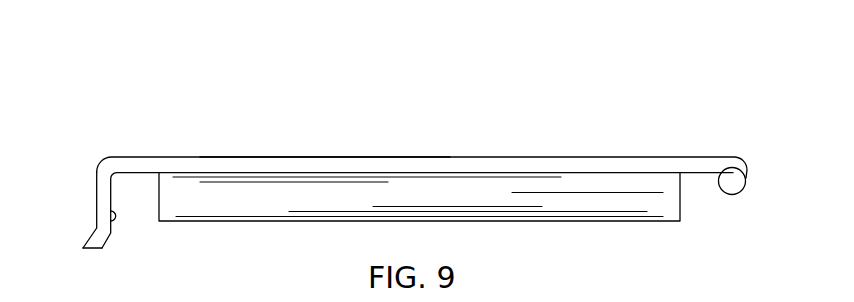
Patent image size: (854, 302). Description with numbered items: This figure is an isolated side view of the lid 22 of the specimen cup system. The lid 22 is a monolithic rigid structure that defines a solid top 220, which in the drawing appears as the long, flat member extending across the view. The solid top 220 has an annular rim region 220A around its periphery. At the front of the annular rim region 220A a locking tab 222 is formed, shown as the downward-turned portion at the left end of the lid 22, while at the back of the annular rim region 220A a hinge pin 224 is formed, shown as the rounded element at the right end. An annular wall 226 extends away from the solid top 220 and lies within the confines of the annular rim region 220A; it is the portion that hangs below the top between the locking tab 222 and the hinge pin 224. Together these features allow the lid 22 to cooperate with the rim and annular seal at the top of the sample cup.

The lid 22 is at (154, 68).
The solid top 220 is at (557, 165).
The annular rim region 220A is at (307, 157).
The locking tab 222 is at (100, 193).
The hinge pin 224 is at (738, 182).
The annular wall 226 is at (585, 215).